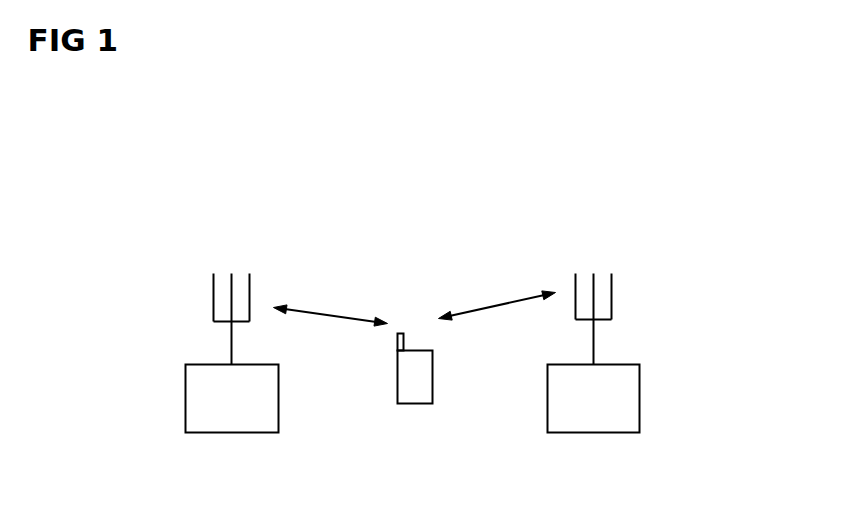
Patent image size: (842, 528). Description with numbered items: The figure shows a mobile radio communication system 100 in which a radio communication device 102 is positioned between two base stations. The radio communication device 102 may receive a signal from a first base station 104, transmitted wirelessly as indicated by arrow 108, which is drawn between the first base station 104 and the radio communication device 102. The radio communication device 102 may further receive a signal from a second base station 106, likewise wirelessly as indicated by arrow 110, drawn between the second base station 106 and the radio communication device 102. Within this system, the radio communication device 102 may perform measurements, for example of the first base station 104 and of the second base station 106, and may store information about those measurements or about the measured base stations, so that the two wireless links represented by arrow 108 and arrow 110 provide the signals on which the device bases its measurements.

The mobile radio communication system 100 is at (700, 150).
The radio communication device 102 is at (406, 392).
The first base station 104 is at (571, 411).
The second base station 106 is at (210, 413).
The arrow 108 is at (475, 308).
The arrow 110 is at (313, 308).